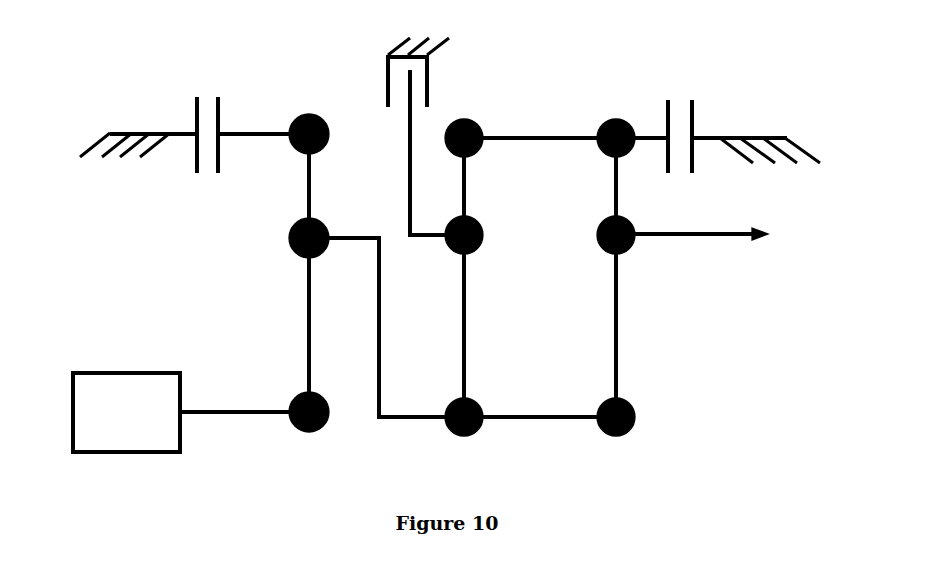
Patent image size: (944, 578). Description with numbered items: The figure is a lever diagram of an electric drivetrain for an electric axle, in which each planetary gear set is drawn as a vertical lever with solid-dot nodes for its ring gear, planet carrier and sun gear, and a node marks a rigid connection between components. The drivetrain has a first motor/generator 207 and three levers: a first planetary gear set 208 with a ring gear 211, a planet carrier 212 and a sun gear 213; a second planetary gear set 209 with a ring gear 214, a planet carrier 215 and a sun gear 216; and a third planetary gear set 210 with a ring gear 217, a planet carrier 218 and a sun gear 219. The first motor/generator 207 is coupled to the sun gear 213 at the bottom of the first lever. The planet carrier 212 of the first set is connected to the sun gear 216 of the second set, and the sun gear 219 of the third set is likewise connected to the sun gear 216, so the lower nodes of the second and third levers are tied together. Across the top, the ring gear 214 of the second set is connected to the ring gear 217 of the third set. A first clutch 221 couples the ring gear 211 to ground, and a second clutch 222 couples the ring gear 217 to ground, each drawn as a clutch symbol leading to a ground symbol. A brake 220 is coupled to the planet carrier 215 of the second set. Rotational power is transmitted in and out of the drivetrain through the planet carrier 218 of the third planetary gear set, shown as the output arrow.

The first motor/generator 207 is at (191, 412).
The first planetary gear set 208 is at (301, 297).
The second planetary gear set 209 is at (388, 302).
The third planetary gear set 210 is at (543, 302).
The ring gear 211 is at (311, 113).
The planet carrier 212 is at (297, 254).
The sun gear 213 is at (293, 402).
The ring gear 214 is at (470, 120).
The planet carrier 215 is at (487, 237).
The sun gear 216 is at (467, 398).
The ring gear 217 is at (617, 120).
The planet carrier 218 is at (630, 248).
The sun gear 219 is at (633, 420).
The brake 220 is at (425, 126).
The first clutch 221 is at (194, 149).
The second clutch 222 is at (718, 124).